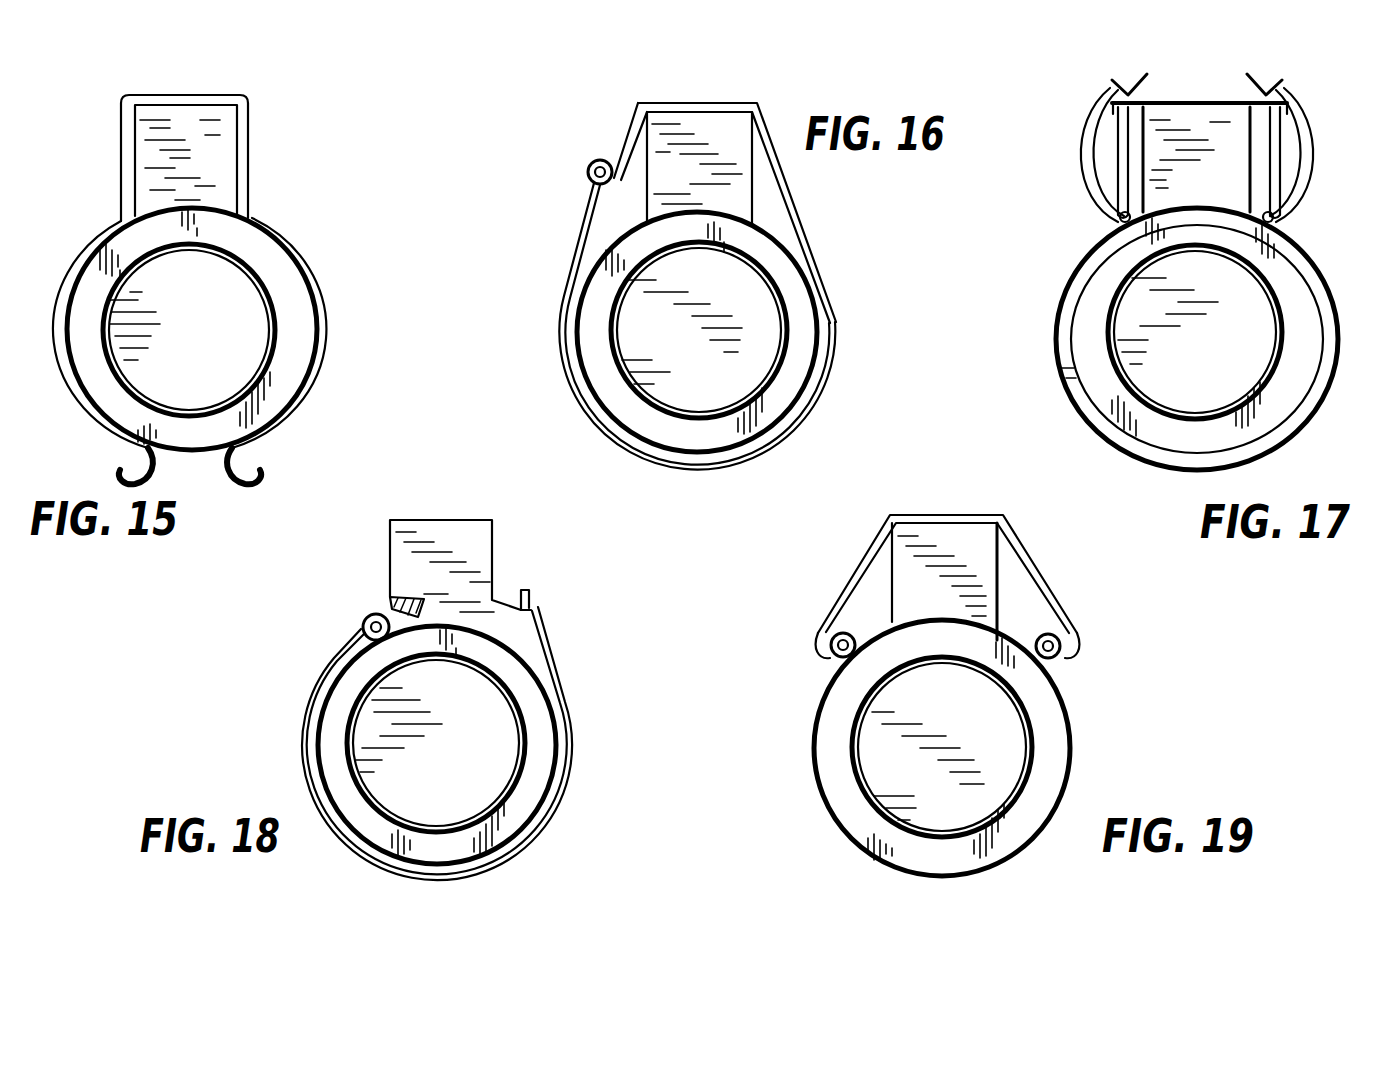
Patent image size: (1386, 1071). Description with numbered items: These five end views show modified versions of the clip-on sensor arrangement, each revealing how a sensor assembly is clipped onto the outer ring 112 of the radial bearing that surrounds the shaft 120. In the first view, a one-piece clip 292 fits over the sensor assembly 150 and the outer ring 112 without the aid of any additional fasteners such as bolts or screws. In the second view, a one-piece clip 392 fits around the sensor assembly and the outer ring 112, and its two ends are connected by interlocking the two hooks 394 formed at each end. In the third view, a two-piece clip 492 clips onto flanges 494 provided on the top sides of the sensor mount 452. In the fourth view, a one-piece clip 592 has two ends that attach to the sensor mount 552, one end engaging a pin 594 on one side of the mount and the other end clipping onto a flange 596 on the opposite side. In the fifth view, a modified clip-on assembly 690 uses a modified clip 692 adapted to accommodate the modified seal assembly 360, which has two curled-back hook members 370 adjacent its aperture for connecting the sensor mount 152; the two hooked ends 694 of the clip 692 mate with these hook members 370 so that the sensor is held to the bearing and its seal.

In FIG. 15, the outer ring 112 is at (262, 258).
In FIG. 16, the outer ring 112 is at (782, 284).
In FIG. 17, the outer ring 112 is at (1248, 242).
In FIG. 18, the outer ring 112 is at (538, 755).
In FIG. 19, the outer ring 112 is at (1060, 743).
In FIG. 15, the shaft 120 is at (217, 382).
In FIG. 16, the shaft 120 is at (735, 387).
In FIG. 17, the shaft 120 is at (1229, 380).
In FIG. 18, the shaft 120 is at (460, 807).
In FIG. 19, the shaft 120 is at (989, 713).
In FIG. 15, the sensor assembly 150 is at (149, 112).
In FIG. 16, the sensor assembly 150 is at (738, 122).
In FIG. 19, the sensor mount 152 is at (975, 530).
In FIG. 15, the one-piece clip 292 is at (119, 216).
In FIG. 19, the seal assembly 360 is at (858, 790).
In FIG. 19, the curled-back hook members 370 is at (850, 590).
In FIG. 16, the one-piece clip 392 is at (661, 103).
In FIG. 16, the hooks 394 is at (608, 160).
In FIG. 17, the sensor mount 452 is at (1230, 192).
In FIG. 17, the two-piece clip 492 is at (1310, 168).
In FIG. 17, the flanges 494 is at (1114, 96).
In FIG. 18, the sensor mount 552 is at (480, 530).
In FIG. 18, the one-piece clip 592 is at (557, 655).
In FIG. 18, the pin 594 is at (358, 620).
In FIG. 18, the flange 596 is at (530, 606).
In FIG. 19, the clip-on assembly 690 is at (946, 655).
In FIG. 19, the modified clip 692 is at (877, 547).
In FIG. 19, the hooked ends 694 is at (826, 652).